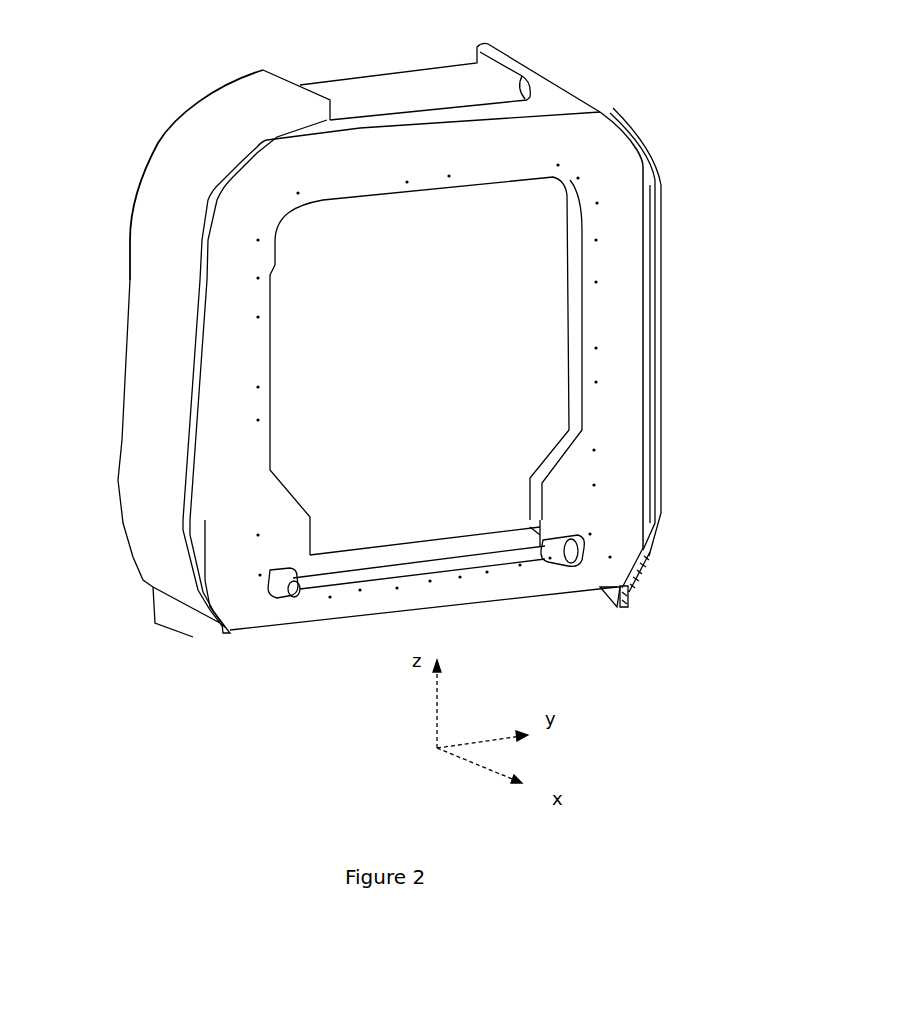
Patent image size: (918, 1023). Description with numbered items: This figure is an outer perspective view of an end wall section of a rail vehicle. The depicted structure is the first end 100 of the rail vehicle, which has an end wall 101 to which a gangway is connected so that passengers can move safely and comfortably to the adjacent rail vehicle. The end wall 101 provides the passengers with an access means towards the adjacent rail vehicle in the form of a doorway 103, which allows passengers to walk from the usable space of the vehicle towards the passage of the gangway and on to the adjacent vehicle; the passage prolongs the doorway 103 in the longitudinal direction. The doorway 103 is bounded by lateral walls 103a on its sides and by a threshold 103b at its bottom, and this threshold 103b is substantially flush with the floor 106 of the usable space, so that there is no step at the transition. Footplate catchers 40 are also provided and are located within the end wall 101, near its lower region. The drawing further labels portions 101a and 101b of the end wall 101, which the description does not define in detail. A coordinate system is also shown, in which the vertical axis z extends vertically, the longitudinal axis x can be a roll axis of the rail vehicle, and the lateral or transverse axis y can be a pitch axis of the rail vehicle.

The first end 100 is at (686, 158).
The end wall 101 is at (580, 480).
The side wall of frame 101a is at (600, 318).
The lower attachment clip 101b is at (580, 557).
The doorway 103 is at (547, 382).
The lateral walls 103a is at (270, 450).
The threshold 103b is at (365, 573).
The floor 106 is at (453, 547).
The footplate catchers 40 is at (283, 598).